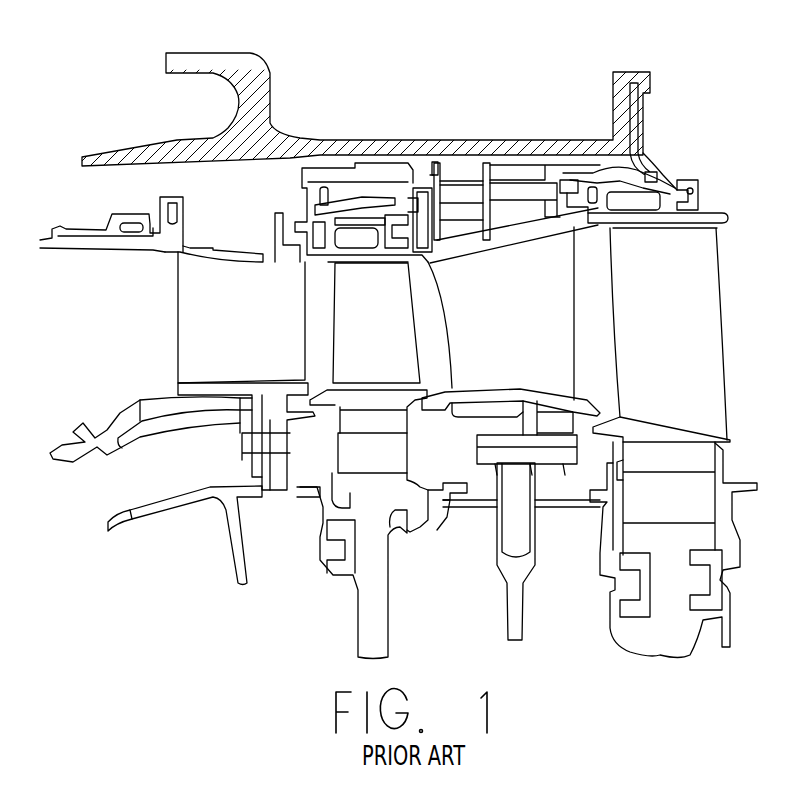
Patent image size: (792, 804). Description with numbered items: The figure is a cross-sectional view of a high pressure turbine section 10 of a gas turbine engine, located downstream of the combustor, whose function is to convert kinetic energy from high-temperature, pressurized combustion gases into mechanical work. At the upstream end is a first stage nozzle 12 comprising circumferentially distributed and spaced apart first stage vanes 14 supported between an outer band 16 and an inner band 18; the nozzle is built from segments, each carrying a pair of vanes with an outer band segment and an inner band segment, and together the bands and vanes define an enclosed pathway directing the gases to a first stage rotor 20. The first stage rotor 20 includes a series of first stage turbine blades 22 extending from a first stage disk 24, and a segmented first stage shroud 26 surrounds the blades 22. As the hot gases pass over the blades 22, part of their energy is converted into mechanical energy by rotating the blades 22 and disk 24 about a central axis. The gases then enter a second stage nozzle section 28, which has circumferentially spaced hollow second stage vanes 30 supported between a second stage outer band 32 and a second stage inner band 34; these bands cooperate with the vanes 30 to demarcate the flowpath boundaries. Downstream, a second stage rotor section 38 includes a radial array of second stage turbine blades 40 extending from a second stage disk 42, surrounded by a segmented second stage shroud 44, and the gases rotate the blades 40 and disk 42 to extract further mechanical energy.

The high pressure turbine section 10 is at (458, 109).
The first stage nozzle 12 is at (219, 434).
The first stage vanes 14 is at (222, 336).
The outer band 16 is at (238, 252).
The inner band 18 is at (170, 398).
The first stage rotor 20 is at (310, 511).
The first stage turbine blades 22 is at (360, 334).
The first stage disk 24 is at (358, 469).
The segmented first stage shroud 26 is at (333, 260).
The second stage nozzle section 28 is at (477, 411).
The second stage vanes 30 is at (501, 329).
The second stage outer band 32 is at (542, 226).
The second stage inner band 34 is at (595, 410).
The second stage rotor section 38 is at (757, 503).
The second stage turbine blades 40 is at (653, 330).
The second stage disk 42 is at (660, 504).
The segmented second stage shroud 44 is at (713, 215).